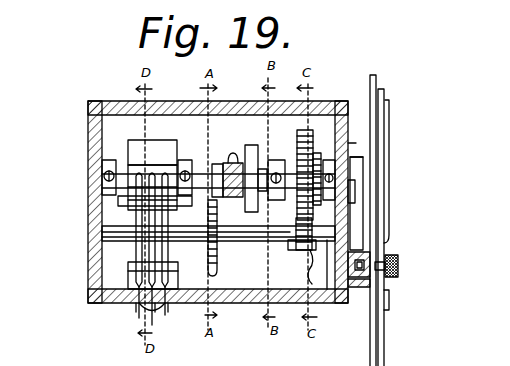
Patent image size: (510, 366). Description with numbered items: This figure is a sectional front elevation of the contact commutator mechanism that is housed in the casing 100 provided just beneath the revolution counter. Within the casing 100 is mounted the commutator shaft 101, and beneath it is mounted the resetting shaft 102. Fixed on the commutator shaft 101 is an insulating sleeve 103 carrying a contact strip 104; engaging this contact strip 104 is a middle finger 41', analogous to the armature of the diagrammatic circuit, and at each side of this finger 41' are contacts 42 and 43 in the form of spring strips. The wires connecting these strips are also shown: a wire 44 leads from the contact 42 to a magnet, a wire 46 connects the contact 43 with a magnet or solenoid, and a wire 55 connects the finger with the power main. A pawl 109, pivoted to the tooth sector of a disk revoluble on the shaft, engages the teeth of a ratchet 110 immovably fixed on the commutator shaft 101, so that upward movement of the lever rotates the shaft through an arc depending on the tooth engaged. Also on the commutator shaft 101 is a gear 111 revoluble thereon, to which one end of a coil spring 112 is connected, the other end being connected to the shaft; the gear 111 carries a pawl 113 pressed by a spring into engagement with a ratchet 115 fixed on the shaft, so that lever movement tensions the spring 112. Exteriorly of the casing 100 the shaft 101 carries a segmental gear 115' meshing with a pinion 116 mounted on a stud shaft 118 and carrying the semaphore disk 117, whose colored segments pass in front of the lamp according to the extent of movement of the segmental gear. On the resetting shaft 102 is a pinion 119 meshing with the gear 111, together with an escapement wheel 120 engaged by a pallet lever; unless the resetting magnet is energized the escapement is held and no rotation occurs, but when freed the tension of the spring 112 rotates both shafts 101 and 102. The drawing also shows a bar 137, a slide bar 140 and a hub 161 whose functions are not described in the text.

The casing 100 is at (348, 122).
The commutator shaft 101 is at (102, 173).
The resetting shaft 102 is at (96, 231).
The insulating sleeve 103 is at (130, 203).
The contact strip 104 is at (140, 160).
The pawl 109 is at (330, 182).
The ratchet 110 is at (356, 153).
The gear 111 is at (294, 169).
The coil spring 112 is at (295, 216).
The pawl 113 is at (342, 144).
The ratchet 115 is at (366, 179).
The segmental gear 115' is at (391, 203).
The pinion 116 is at (370, 249).
The semaphore disk 117 is at (372, 352).
The stud shaft 118 is at (354, 279).
The pinion 119 is at (312, 272).
The escapement wheel 120 is at (214, 271).
The bar 137 is at (196, 224).
The slide bar 140 is at (218, 227).
The hub 161 is at (216, 162).
The middle finger 41' is at (175, 249).
The contact 42 is at (136, 259).
The contact 43 is at (168, 258).
The wire 44 is at (141, 310).
The wire 46 is at (163, 311).
The wire 55 is at (152, 303).